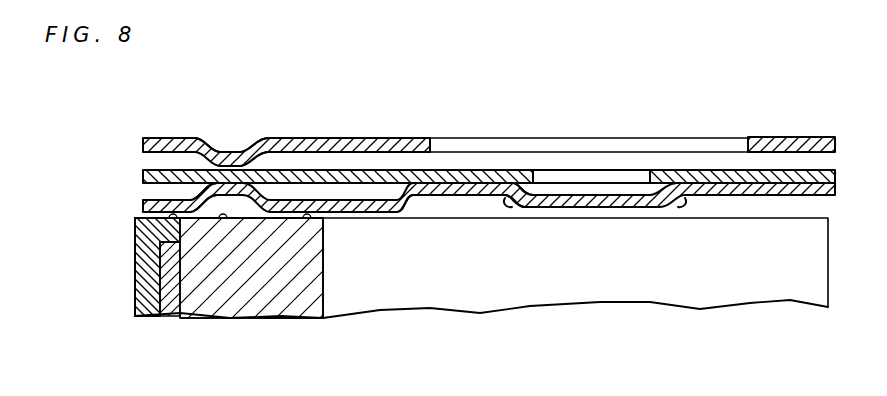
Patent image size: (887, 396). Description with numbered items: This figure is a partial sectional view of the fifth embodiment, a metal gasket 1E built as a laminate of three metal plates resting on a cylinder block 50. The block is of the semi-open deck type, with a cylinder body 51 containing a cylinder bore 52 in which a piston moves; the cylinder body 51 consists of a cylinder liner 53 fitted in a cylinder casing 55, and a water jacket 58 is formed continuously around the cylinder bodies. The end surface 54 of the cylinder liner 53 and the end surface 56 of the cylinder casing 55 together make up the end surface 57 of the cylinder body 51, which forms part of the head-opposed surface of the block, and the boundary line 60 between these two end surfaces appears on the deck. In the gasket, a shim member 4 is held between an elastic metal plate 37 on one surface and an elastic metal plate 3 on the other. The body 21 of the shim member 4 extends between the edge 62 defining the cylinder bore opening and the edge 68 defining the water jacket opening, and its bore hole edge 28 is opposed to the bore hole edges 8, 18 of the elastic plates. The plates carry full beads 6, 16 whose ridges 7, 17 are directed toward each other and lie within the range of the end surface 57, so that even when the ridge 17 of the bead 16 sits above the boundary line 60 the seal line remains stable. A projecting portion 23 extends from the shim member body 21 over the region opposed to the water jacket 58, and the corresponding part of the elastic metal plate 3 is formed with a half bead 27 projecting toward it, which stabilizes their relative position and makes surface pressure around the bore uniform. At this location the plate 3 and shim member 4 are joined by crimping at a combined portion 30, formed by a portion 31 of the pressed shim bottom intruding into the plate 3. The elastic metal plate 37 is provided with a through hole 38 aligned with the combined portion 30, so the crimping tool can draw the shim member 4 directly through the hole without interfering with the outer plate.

The metal gasket 1E is at (517, 112).
The elastic metal plate 3 is at (414, 216).
The shim member 4 is at (517, 168).
The bead 6 is at (226, 160).
The ridge 7 is at (236, 162).
The bore hole edge 8 is at (143, 146).
The bead 16 is at (232, 186).
The ridge 17 is at (246, 190).
The bore hole edge 18 is at (143, 207).
The shim member body 21 is at (373, 170).
The projecting portion 23 is at (470, 170).
The half bead 27 is at (470, 190).
The bore hole edge 28 is at (143, 176).
The combined portion 30 is at (612, 191).
The intruded portion 31 is at (530, 207).
The elastic metal plate 37 is at (362, 143).
The through hole 38 is at (431, 140).
The cylinder block 50 is at (132, 317).
The cylinder body 51 is at (277, 311).
The cylinder bore 52 is at (22, 241).
The cylinder liner 53 is at (135, 276).
The end surface of cylinder liner 54 is at (180, 318).
The cylinder casing 55 is at (325, 305).
The end surface of cylinder casing 56 is at (251, 295).
The end surface of cylinder body 57 is at (238, 215).
The water jacket 58 is at (580, 272).
The boundary line 60 is at (225, 223).
The edge defining opening of cylinder bore 62 is at (133, 220).
The edge defining opening of water jacket 68 is at (325, 221).